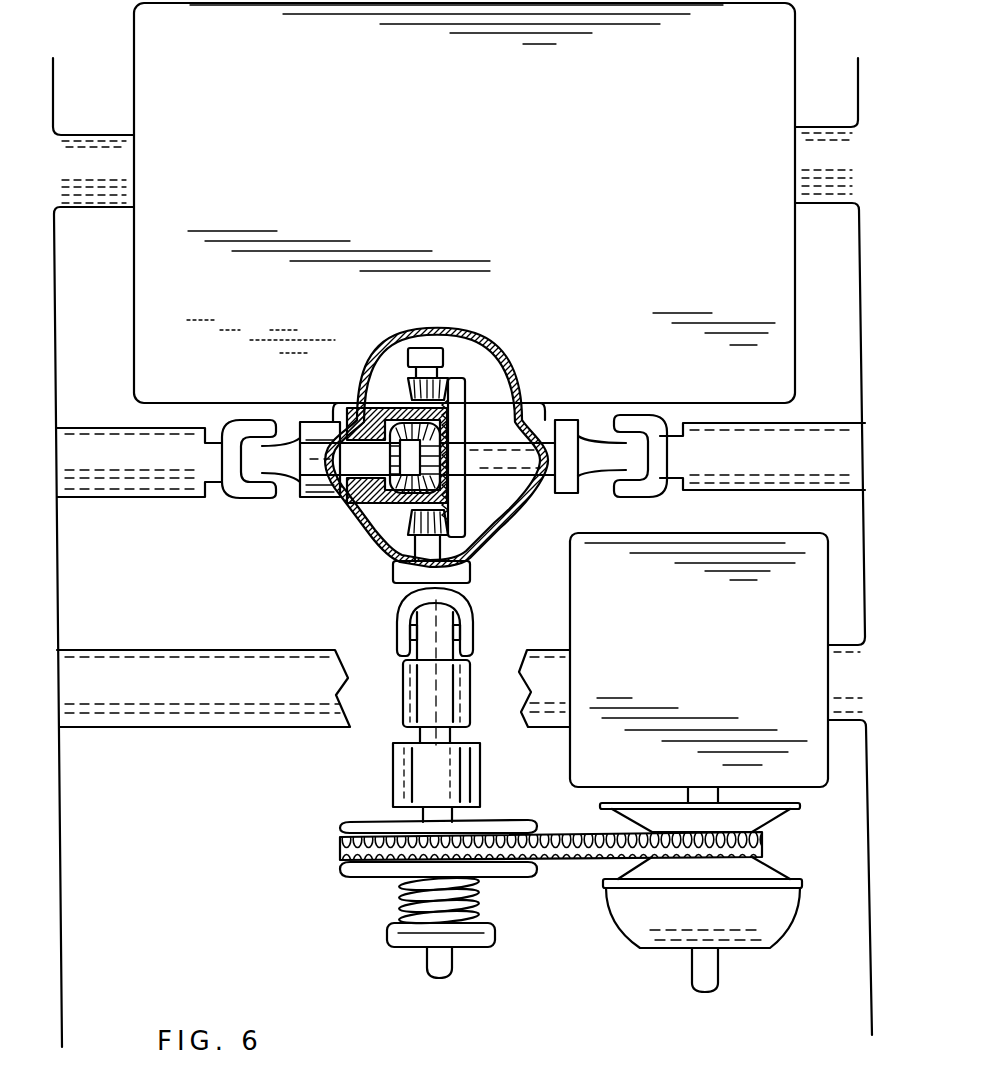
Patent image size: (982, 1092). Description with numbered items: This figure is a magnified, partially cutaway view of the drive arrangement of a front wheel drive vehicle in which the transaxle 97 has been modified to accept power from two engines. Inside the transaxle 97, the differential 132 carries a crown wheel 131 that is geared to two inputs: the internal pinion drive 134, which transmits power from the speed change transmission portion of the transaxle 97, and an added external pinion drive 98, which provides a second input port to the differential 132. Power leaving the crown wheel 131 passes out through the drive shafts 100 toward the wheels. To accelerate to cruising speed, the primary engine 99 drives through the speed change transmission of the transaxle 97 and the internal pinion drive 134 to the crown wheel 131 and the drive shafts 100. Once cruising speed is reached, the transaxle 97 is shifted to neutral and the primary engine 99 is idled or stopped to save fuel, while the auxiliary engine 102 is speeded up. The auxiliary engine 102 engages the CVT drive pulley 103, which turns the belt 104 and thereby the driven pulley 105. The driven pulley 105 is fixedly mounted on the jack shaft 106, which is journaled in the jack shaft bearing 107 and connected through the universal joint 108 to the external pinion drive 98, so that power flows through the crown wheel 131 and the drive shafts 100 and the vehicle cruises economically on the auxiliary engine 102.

The transaxle 97 is at (509, 546).
The external pinion drive 98 is at (427, 547).
The primary engine 99 is at (470, 173).
The drive shafts 100 is at (137, 497).
The auxiliary engine 102 is at (715, 665).
The CVT drive pulley 103 is at (770, 948).
The belt 104 is at (565, 862).
The driven pulley 105 is at (338, 877).
The jack shaft 106 is at (428, 965).
The jack shaft bearing 107 is at (395, 774).
The universal joint 108 is at (400, 615).
The crown wheel 131 is at (456, 393).
The differential 132 is at (481, 411).
The internal pinion drive 134 is at (433, 355).